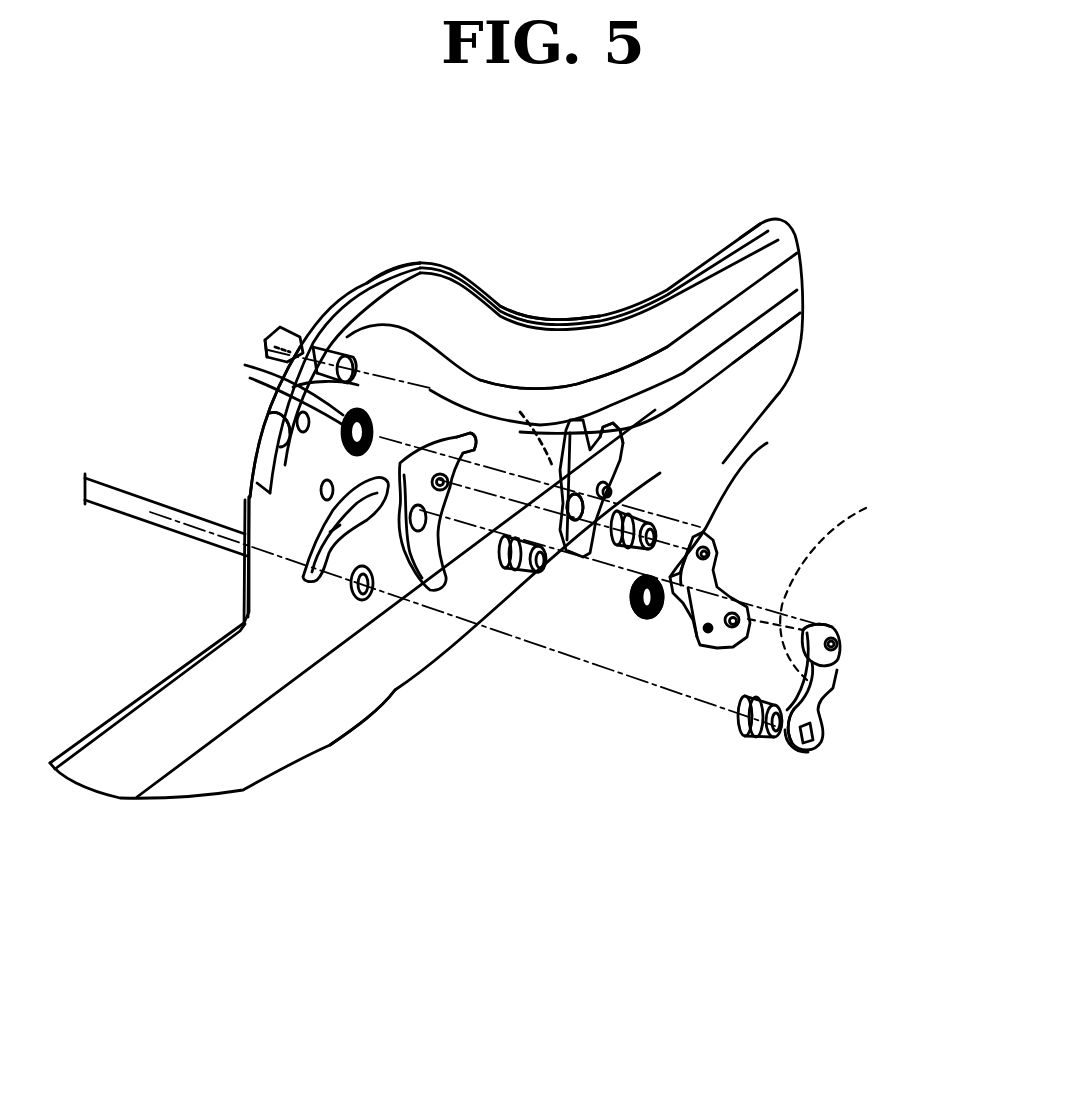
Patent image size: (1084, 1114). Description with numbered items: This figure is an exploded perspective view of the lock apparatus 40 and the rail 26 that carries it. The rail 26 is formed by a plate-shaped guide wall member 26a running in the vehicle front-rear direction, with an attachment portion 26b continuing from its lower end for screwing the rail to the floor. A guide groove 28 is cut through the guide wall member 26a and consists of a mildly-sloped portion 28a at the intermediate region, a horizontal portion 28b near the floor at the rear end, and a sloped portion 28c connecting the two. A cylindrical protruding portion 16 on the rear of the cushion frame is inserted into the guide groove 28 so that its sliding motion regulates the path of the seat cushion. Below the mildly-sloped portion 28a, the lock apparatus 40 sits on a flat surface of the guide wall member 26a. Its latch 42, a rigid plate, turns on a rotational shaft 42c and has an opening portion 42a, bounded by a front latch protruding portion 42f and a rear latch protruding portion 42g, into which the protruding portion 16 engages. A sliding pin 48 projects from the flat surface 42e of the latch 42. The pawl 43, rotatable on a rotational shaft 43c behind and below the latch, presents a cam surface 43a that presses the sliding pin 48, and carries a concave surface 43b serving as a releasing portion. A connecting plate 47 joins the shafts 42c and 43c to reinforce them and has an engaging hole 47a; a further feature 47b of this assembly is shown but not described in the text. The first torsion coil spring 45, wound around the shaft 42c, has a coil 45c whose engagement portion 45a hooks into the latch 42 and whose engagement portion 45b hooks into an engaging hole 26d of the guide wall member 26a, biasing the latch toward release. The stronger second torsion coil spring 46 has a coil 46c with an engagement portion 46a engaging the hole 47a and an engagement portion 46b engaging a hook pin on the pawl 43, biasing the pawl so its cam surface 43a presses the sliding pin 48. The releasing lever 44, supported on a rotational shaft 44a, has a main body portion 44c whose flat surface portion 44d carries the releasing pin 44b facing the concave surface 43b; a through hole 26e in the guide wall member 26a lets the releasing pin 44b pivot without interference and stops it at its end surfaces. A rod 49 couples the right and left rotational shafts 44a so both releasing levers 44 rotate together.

The protruding portion 16 is at (290, 328).
The rail 26 is at (130, 705).
The guide wall member 26a is at (227, 648).
The attachment portion 26b is at (363, 738).
The engaging hole 26d is at (273, 396).
The through hole 26e is at (240, 497).
The guide groove 28 is at (582, 385).
The mildly-sloped portion 28a is at (372, 315).
The horizontal portion 28b is at (743, 303).
The sloped portion 28c is at (470, 393).
The lock apparatus 40 is at (550, 762).
The latch 42 is at (620, 457).
The opening portion 42a is at (607, 398).
The rotational shaft 42c is at (633, 517).
The flat surface 42e is at (535, 422).
The latch protruding portion 42f is at (556, 470).
The latch protruding portion 42g is at (623, 437).
The pawl 43 is at (409, 607).
The cam surface 43a is at (437, 425).
The concave surface 43b is at (440, 545).
The rotational shaft 43c is at (520, 572).
The releasing lever 44 is at (847, 673).
The rotational shaft 44a is at (779, 740).
The releasing pin 44b is at (811, 628).
The main body portion 44c is at (830, 698).
The flat surface portion 44d is at (835, 581).
The first torsion coil spring 45 is at (273, 423).
The engagement portion 45a is at (410, 433).
The engagement portion 45b is at (253, 450).
The coil 45c is at (267, 358).
The second torsion coil spring 46 is at (643, 620).
The engagement portion 46a is at (630, 603).
The engagement portion 46b is at (665, 565).
The coil 46c is at (657, 620).
The connecting plate 47 is at (740, 607).
The engaging hole 47a is at (710, 635).
The support flange 47b is at (667, 595).
The sliding pin 48 is at (580, 450).
The rod 49 is at (120, 493).